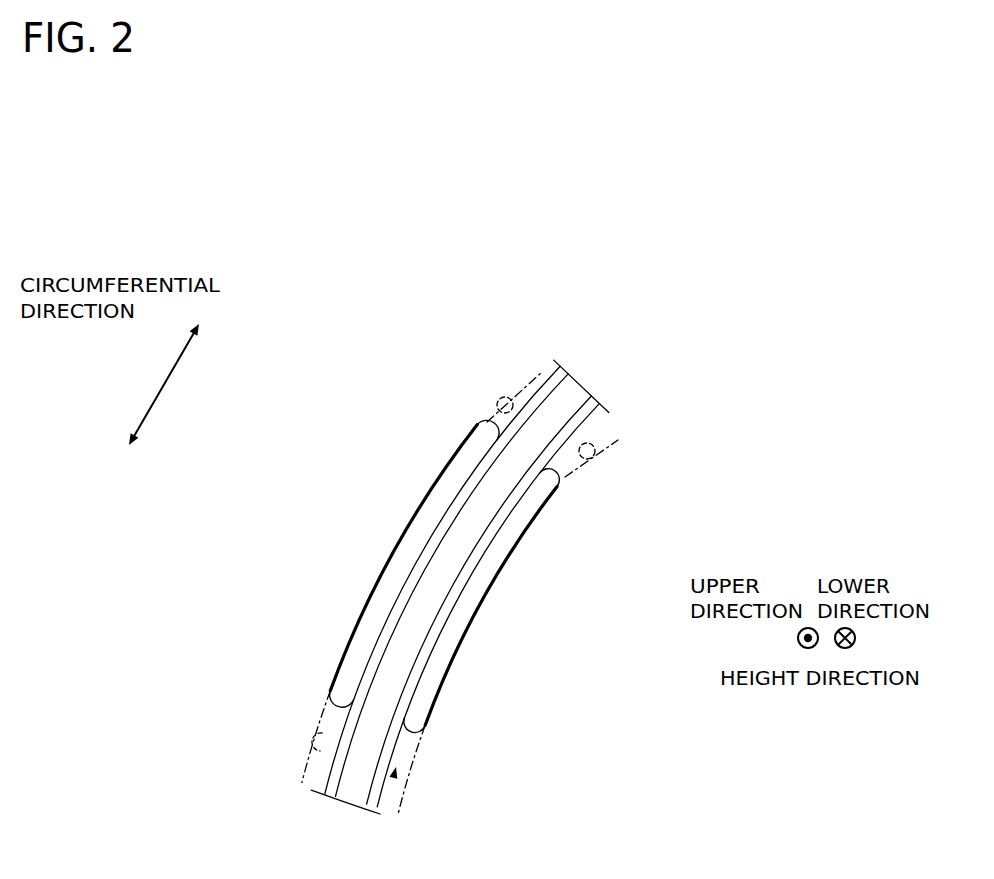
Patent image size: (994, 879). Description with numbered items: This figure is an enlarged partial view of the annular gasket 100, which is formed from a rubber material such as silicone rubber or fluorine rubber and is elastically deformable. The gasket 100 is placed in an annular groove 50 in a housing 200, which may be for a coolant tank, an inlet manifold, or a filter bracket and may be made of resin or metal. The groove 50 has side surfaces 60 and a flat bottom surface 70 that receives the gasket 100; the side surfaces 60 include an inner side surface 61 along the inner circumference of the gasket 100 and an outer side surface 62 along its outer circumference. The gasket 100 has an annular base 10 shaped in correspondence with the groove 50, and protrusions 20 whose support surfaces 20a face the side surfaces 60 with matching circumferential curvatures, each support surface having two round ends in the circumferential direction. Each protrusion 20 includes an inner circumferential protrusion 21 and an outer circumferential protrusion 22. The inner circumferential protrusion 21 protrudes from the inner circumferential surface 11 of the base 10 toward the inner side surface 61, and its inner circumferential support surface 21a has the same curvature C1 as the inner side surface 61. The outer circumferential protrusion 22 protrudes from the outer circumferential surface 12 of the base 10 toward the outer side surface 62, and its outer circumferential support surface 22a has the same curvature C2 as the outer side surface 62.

The gasket 100 is at (546, 377).
The base 10 is at (552, 418).
The inner circumferential surface 11 is at (388, 812).
The outer circumferential surface 12 is at (345, 723).
The protrusions 20 is at (414, 576).
The inner circumferential protrusion 21 is at (494, 553).
The outer circumferential protrusion 22 is at (424, 529).
The support surfaces 20a is at (443, 575).
The inner circumferential support surface 21a is at (465, 637).
The outer circumferential support surface 22a is at (370, 603).
The side surfaces 60 is at (539, 430).
The inner side surface 61 is at (596, 448).
The outer side surface 62 is at (496, 403).
The bottom surface 70 is at (318, 745).
The groove 50 is at (400, 778).
The housing 200 is at (503, 753).
The curvature of inner side surface C1 is at (540, 534).
The curvature of outer side surface C2 is at (440, 466).